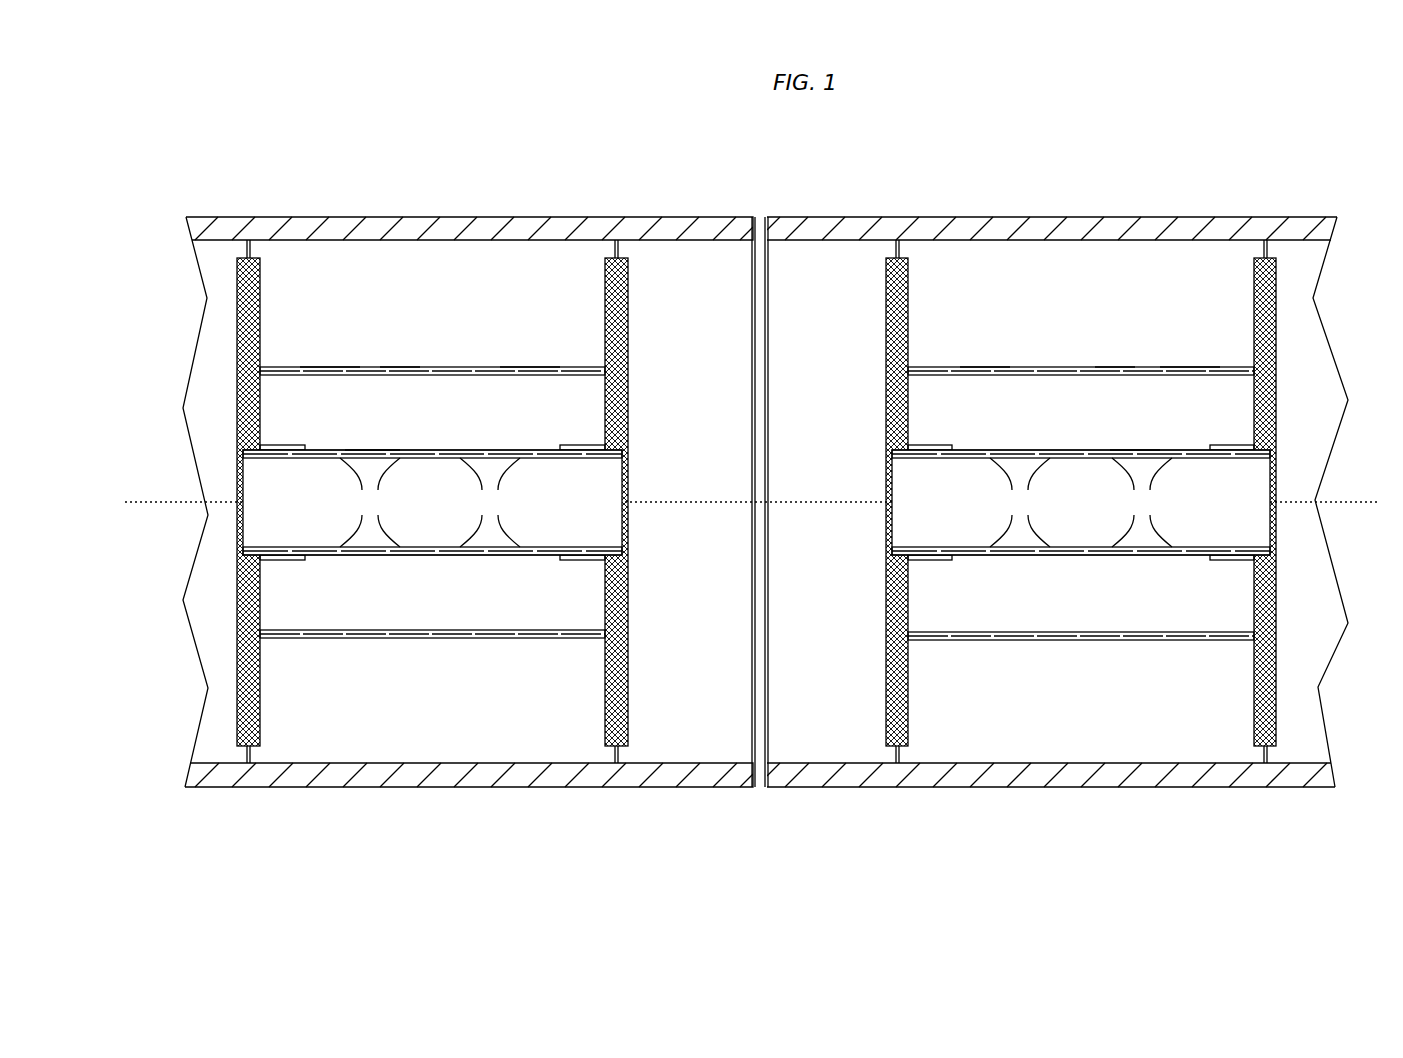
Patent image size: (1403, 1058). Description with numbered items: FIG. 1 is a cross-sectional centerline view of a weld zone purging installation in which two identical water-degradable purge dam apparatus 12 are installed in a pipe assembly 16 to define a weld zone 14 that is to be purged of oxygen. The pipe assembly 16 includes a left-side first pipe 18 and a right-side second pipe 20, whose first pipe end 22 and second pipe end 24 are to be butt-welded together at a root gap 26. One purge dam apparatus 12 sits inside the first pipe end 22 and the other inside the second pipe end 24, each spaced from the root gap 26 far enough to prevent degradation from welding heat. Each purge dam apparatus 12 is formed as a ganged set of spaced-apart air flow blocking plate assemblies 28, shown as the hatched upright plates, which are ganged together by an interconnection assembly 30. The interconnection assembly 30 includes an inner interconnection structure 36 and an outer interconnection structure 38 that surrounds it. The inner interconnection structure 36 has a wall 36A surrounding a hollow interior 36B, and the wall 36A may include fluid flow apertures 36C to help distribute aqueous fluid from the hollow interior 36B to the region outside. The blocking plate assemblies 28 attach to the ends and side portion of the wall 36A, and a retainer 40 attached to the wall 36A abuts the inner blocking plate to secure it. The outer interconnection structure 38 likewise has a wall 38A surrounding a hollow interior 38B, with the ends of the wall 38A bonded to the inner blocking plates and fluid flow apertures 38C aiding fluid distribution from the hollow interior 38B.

The purge dam apparatus 12 is at (378, 292).
The weld zone 14 is at (822, 270).
The pipe assembly 16 is at (557, 165).
The first pipe 18 is at (193, 335).
The second pipe 20 is at (1330, 340).
The first pipe end 22 is at (708, 790).
The second pipe end 24 is at (808, 790).
The root gap 26 is at (758, 797).
The blocking plate assembly 28 is at (284, 712).
The interconnection assembly 30 is at (434, 546).
The inner interconnection structure 36 is at (447, 447).
The interconnection structure wall 36A is at (364, 449).
The hollow interior 36B is at (754, 470).
The fluid flow apertures 36C is at (756, 502).
The outer interconnection structure 38 is at (449, 364).
The outer interconnection structure wall 38A is at (395, 366).
The hollow interior 38B is at (762, 385).
The fluid flow apertures 38C is at (342, 366).
The retainer 40 is at (290, 444).